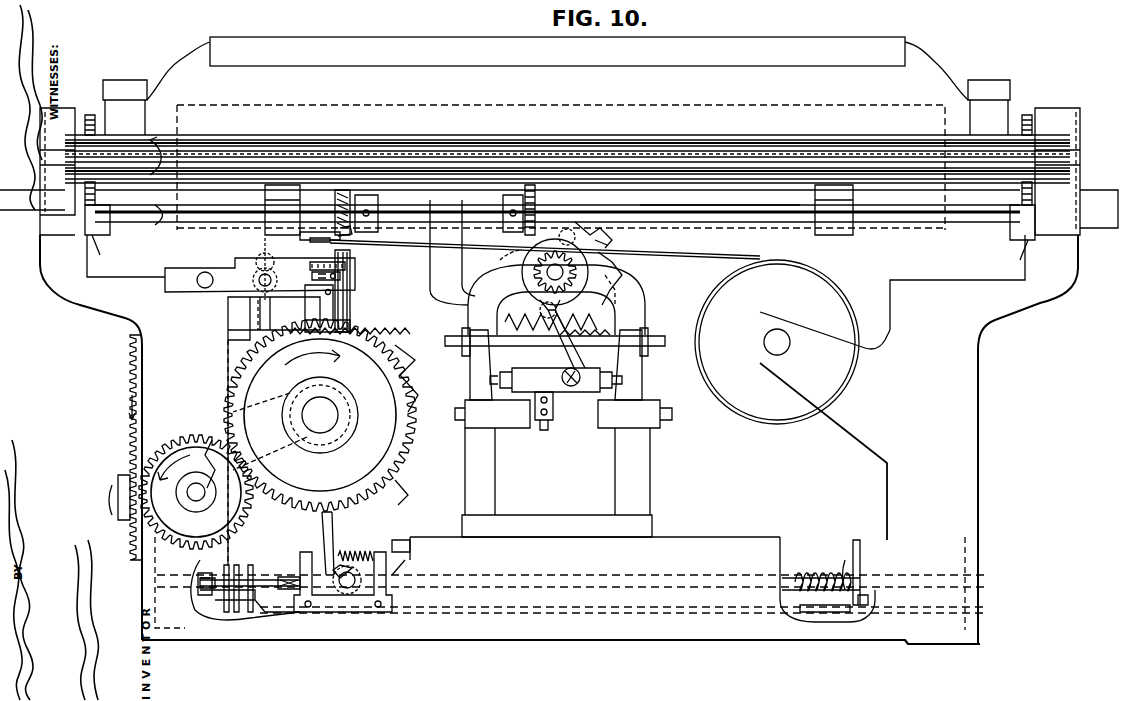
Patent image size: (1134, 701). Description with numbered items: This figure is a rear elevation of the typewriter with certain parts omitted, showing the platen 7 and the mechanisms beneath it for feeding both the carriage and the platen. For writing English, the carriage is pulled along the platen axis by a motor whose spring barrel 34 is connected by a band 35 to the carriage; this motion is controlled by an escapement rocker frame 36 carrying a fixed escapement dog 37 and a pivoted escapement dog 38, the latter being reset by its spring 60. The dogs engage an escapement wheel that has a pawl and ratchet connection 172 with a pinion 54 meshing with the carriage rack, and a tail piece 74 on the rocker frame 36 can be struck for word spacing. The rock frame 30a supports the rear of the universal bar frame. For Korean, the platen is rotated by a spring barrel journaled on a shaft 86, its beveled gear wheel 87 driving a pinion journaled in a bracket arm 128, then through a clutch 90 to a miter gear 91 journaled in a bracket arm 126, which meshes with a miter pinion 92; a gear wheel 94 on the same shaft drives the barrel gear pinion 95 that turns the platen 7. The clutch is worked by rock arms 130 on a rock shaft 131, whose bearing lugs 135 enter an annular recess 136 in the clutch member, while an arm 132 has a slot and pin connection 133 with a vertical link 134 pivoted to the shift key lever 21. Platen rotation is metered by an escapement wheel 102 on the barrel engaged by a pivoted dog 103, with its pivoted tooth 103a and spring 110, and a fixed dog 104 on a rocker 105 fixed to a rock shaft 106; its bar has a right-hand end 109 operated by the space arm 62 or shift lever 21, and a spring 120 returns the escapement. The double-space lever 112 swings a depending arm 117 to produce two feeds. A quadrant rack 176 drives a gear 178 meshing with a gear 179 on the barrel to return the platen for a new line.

The platen 7 is at (640, 106).
The shift key lever 21 is at (285, 577).
The rock frame 30a is at (642, 372).
The spring barrel 34 is at (792, 400).
The band 35 is at (728, 256).
The rocker frame 36 is at (572, 386).
The fixed escapement dog 37 is at (505, 354).
The pivoted escapement dog 38 is at (538, 318).
The pinion 54 is at (520, 262).
The spring 60 is at (604, 318).
The space key lever arm 62 is at (243, 578).
The tail piece 74 is at (548, 425).
The shaft 86 is at (320, 415).
The beveled gear wheel 87 is at (380, 410).
The clutch 90 is at (345, 266).
The miter gear 91 is at (352, 240).
The miter pinion 92 is at (338, 196).
The gear wheel 94 is at (535, 200).
The barrel gear pinion 95 is at (440, 135).
The escapement wheel 102 is at (402, 490).
The pivoted escapement dog 103 is at (360, 555).
The pivoted tooth 103a is at (340, 565).
The fixed escapement dog 104 is at (325, 530).
The rocker 105 is at (372, 575).
The rock shaft 106 is at (418, 572).
The right-hand end 109 is at (200, 610).
The spring 110 is at (395, 554).
The lever 112 is at (236, 556).
The depending arm 117 is at (196, 492).
The spring 120 is at (808, 570).
The bracket arm 126 is at (238, 256).
The bracket arm 128 is at (352, 324).
The rock arms 130 is at (290, 300).
The rock shaft 131 is at (205, 288).
The arm 132 is at (262, 246).
The slot and pin connection 133 is at (258, 280).
The vertical link 134 is at (258, 330).
The bearing lugs 135 is at (350, 295).
The annular recess 136 is at (340, 276).
The pawl and ratchet connection 172 is at (625, 285).
The quadrant rack 176 is at (142, 375).
The gear 178 is at (210, 450).
The gear 179 is at (420, 352).